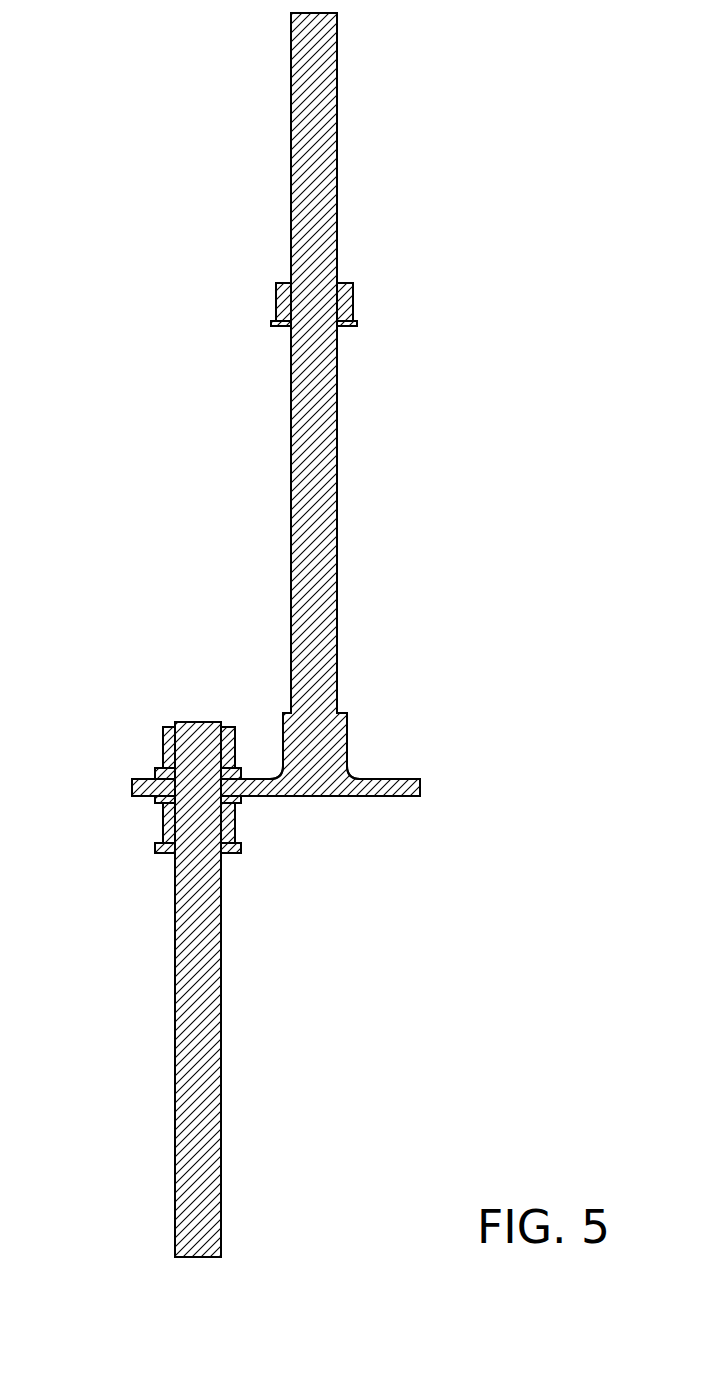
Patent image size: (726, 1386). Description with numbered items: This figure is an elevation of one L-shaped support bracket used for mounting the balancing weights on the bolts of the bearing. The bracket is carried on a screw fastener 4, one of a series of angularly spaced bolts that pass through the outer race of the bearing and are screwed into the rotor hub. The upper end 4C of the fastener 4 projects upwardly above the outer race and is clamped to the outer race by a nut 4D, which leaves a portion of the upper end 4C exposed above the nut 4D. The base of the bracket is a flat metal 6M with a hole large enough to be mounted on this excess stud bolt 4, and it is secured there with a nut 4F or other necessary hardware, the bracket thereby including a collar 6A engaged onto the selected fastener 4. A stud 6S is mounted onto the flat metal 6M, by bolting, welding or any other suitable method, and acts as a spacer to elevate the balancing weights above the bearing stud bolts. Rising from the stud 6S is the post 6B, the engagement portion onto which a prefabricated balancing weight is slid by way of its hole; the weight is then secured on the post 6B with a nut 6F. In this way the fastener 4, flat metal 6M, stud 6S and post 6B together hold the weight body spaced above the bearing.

The screw fastener 4 is at (200, 1100).
The upper end of the fastener 4C is at (205, 738).
The nut 4F is at (165, 743).
The nut 4D is at (237, 830).
The post 6B is at (315, 527).
The nut 6F is at (352, 297).
The stud 6S is at (277, 750).
The collar 6A is at (357, 780).
The flat metal 6M is at (420, 792).